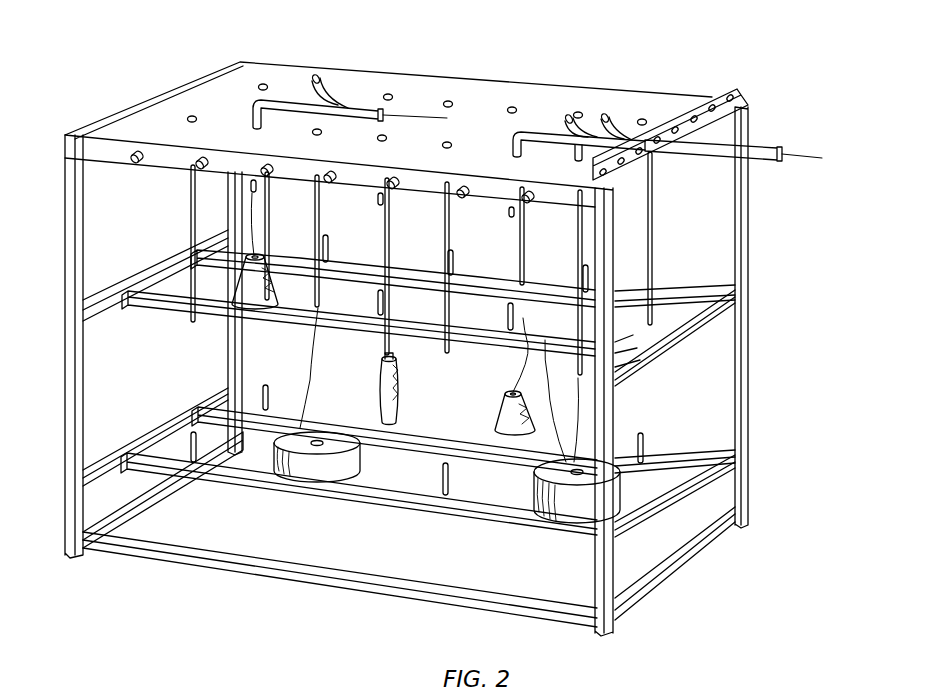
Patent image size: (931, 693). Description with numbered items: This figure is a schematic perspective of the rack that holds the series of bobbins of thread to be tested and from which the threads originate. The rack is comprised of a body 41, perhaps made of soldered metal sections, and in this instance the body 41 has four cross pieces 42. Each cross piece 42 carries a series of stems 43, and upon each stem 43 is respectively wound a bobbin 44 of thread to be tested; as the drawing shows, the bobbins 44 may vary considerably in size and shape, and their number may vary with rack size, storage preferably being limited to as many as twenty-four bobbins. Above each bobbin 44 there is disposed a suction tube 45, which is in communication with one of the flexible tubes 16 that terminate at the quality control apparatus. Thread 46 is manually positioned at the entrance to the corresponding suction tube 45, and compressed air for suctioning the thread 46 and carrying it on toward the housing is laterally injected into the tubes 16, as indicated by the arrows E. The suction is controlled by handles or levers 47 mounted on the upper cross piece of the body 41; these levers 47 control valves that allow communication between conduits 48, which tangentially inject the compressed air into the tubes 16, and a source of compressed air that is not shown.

The flexible tube 16 is at (363, 114).
The body 41 is at (760, 348).
The cross piece 42 is at (678, 300).
The stem 43 is at (270, 395).
The bobbin 44 is at (260, 300).
The suction tube 45 is at (520, 252).
The thread 46 is at (558, 403).
The handle or lever 47 is at (266, 166).
The conduit 48 is at (322, 92).
The arrows indicating lateral injection of compressed air E is at (309, 73).